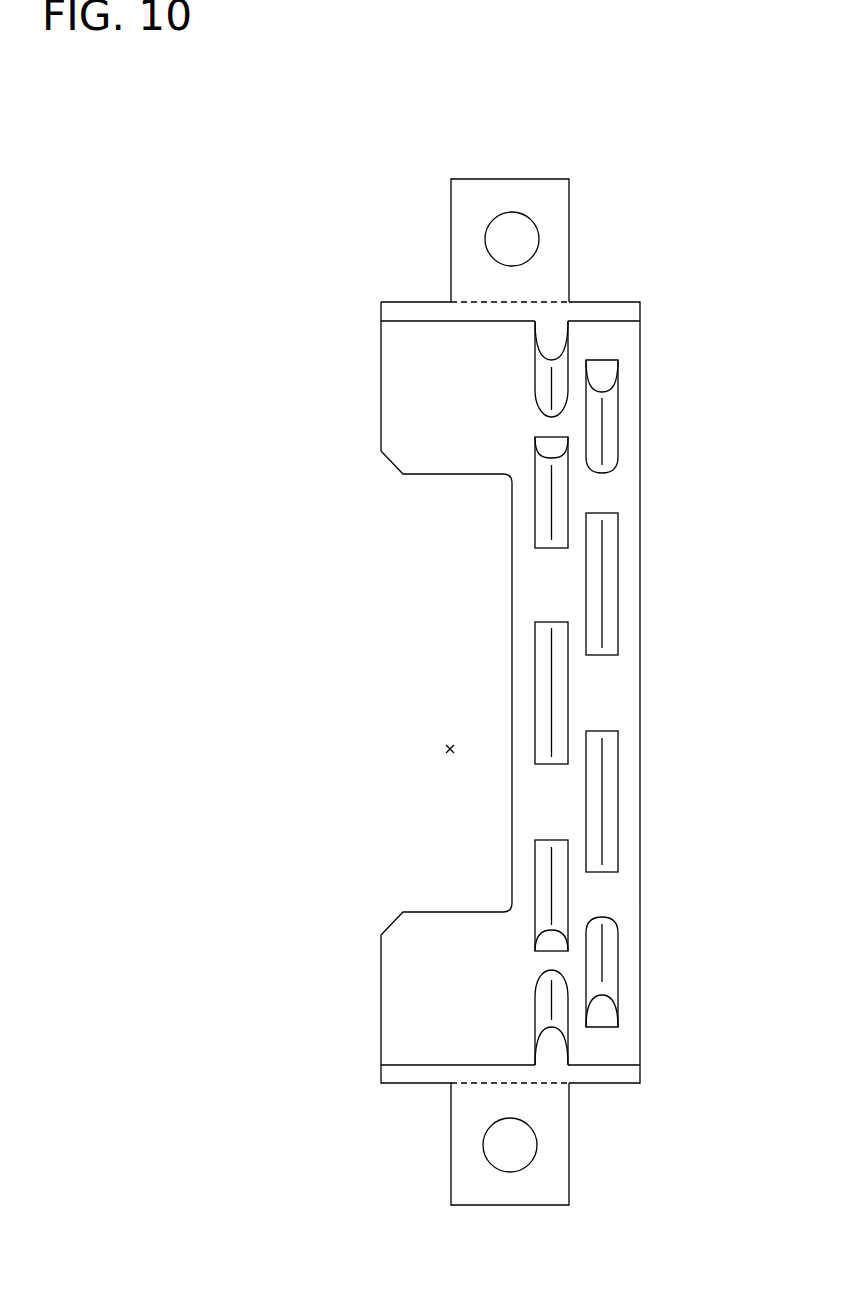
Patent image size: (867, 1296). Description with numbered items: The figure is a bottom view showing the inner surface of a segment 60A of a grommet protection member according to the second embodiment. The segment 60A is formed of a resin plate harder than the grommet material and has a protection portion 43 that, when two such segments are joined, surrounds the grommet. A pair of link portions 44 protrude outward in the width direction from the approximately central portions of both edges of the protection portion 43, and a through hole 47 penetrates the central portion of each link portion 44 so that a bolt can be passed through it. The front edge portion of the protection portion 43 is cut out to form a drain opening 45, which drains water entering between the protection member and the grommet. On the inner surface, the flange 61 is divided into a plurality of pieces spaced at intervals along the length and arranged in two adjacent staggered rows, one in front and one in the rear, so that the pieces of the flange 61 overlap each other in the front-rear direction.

The protection portion 43 is at (406, 395).
The link portion 44 is at (522, 179).
The drain opening 45 is at (447, 750).
The through hole 47 is at (521, 237).
The segment 60A is at (607, 699).
The flange 61 is at (545, 503).